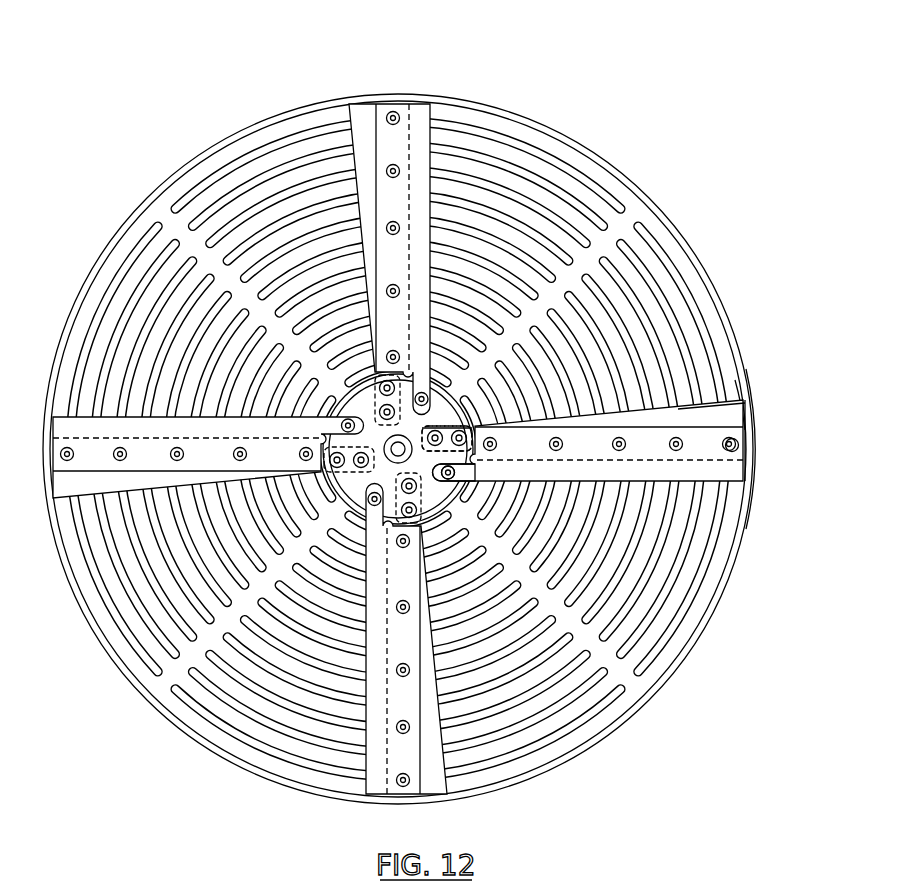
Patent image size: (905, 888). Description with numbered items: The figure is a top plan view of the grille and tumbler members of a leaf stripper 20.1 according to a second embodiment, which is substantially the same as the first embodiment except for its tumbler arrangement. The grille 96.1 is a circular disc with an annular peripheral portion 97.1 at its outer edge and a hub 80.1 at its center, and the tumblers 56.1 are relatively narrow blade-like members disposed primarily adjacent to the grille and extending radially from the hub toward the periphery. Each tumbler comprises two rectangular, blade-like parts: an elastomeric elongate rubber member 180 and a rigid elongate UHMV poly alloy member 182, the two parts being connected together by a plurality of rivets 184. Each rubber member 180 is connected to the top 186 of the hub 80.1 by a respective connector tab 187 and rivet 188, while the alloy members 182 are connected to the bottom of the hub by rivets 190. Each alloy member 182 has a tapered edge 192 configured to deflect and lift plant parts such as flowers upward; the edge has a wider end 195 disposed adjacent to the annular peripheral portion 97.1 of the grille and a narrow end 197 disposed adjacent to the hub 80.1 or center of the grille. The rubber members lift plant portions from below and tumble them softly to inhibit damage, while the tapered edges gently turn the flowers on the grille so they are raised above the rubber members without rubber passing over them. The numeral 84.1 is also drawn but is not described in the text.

The leaf stripper 20.1 is at (80, 86).
The tumblers 56.1 is at (772, 446).
The hub 80.1 is at (337, 249).
The second support arm 84.1 is at (302, 633).
The grille 96.1 is at (398, 449).
The annular peripheral portion 97.1 is at (678, 226).
The elongate rubber member 180 is at (608, 482).
The elongate UHMV poly alloy member 182 is at (772, 417).
The rivets 184 is at (780, 467).
The top of the hub 186 is at (447, 425).
The connector tab 187 is at (617, 533).
The rivet 188 is at (612, 555).
The rivets 190 is at (533, 455).
The tapered edge 192 is at (727, 341).
The wider end 195 is at (744, 398).
The narrow end 197 is at (598, 331).